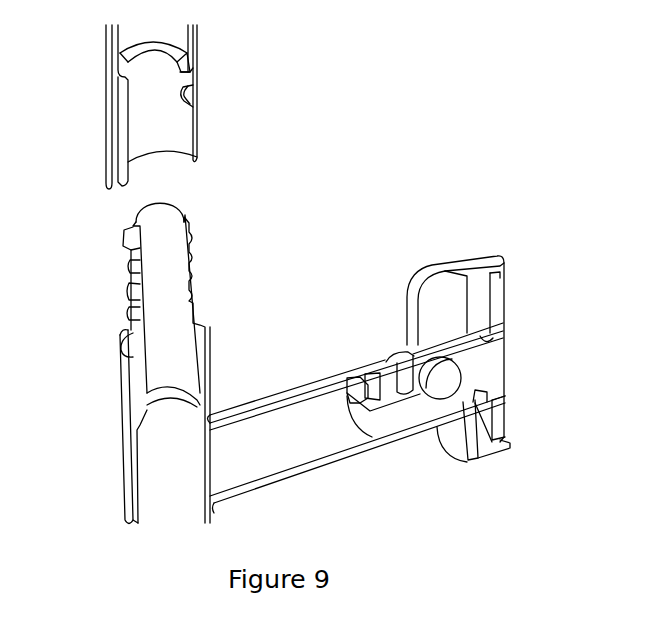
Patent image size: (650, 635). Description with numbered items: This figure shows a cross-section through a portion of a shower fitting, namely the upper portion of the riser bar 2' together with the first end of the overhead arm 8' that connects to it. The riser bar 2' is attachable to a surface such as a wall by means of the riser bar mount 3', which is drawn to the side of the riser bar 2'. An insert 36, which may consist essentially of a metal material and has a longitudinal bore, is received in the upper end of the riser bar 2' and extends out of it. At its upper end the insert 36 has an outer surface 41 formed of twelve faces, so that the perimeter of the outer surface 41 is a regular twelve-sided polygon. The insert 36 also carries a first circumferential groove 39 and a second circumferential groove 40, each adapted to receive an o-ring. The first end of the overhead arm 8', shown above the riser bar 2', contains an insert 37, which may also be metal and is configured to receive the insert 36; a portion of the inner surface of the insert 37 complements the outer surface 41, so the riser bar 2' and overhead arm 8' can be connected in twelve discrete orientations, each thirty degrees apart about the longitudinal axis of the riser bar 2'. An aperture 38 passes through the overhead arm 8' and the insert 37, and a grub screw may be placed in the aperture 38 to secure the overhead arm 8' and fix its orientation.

The overhead arm 8' is at (125, 107).
The insert 37 is at (195, 72).
The aperture 38 is at (195, 95).
The outer surface 41 is at (173, 207).
The first circumferential groove 39 is at (128, 263).
The second circumferential groove 40 is at (130, 308).
The insert 36 is at (190, 270).
The riser bar 2' is at (100, 427).
The riser bar mount 3' is at (359, 350).